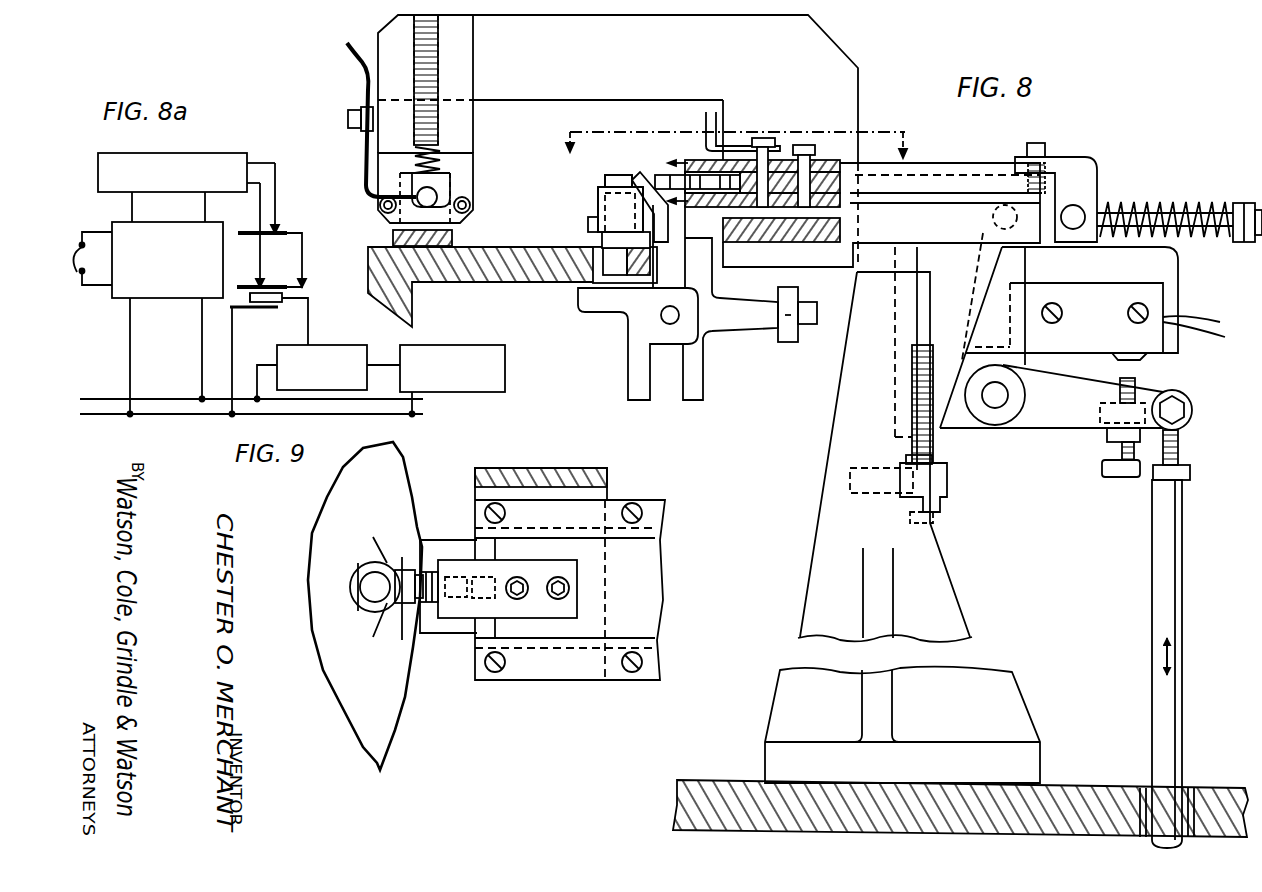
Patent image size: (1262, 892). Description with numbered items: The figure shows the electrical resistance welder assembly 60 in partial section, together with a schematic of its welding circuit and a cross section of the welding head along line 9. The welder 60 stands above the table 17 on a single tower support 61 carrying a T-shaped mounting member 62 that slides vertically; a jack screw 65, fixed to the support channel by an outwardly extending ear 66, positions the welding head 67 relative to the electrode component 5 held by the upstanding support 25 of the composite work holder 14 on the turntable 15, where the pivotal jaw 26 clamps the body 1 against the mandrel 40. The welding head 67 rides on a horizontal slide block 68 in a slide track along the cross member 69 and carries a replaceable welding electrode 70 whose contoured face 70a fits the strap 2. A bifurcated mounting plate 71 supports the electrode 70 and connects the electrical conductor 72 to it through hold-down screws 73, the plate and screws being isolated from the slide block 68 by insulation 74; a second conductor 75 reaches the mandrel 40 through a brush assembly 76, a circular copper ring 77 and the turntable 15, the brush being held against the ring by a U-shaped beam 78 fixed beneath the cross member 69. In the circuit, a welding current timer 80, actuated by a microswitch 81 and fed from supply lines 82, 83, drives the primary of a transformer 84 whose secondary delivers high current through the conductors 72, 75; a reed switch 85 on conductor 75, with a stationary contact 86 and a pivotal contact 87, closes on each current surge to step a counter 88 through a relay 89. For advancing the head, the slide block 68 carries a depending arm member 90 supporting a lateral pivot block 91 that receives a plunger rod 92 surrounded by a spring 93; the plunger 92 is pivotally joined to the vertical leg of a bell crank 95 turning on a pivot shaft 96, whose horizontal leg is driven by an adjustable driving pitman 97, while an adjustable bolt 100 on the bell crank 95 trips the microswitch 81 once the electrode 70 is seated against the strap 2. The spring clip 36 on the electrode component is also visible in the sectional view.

In FIG. 8, the body 1 is at (608, 173).
In FIG. 8, the strap 2 is at (624, 173).
In FIG. 9, the strap 2 is at (383, 612).
In FIG. 8, the electrode component 5 is at (615, 150).
In FIG. 9, the electrode component 5 is at (350, 575).
In FIG. 8, the section line 9- 9 is at (745, 162).
In FIG. 8, the composite work holder 14 is at (608, 325).
In FIG. 8, the turntable 15 is at (512, 273).
In FIG. 8, the table 17 is at (1217, 797).
In FIG. 8, the upstanding support 25 is at (576, 201).
In FIG. 9, the upstanding support 25 is at (335, 614).
In FIG. 8, the pivotal jaw 26 is at (729, 347).
In FIG. 9, the spring clip 36 is at (403, 557).
In FIG. 8A, the mandrel 40 is at (304, 283).
In FIG. 8, the mandrel 40 is at (603, 240).
In FIG. 8, the electrical resistance welder assembly 60 is at (1036, 116).
In FIG. 8, the tower support 61 is at (828, 518).
In FIG. 8, the T-shaped mounting member 62 is at (966, 277).
In FIG. 8, the jack screw 65 is at (932, 459).
In FIG. 8, the outwardly extending ear 66 is at (950, 485).
In FIG. 8, the welding head 67 is at (740, 110).
In FIG. 9, the welding head 67 is at (462, 545).
In FIG. 8, the horizontal slide block 68 is at (843, 170).
In FIG. 9, the horizontal slide block 68 is at (647, 556).
In FIG. 8, the cross member 69 is at (918, 233).
In FIG. 9, the cross member 69 is at (652, 512).
In FIG. 8A, the welding electrode 70 is at (303, 243).
In FIG. 8, the welding electrode 70 is at (670, 163).
In FIG. 9, the welding electrode 70 is at (434, 575).
In FIG. 9, the contoured face 70a is at (403, 638).
In FIG. 8, the bifurcated mounting plate 71 is at (669, 176).
In FIG. 9, the bifurcated mounting plate 71 is at (572, 608).
In FIG. 8A, the electrical conductor 72 is at (282, 231).
In FIG. 8, the electrical conductor 72 is at (712, 113).
In FIG. 8, the hold-down screws 73 is at (762, 138).
In FIG. 9, the hold-down screws 73 is at (557, 577).
In FIG. 8, the insulation 74 is at (790, 150).
In FIG. 8A, the second conductor 75 is at (248, 284).
In FIG. 8, the second conductor 75 is at (346, 50).
In FIG. 8, the brush assembly 76 is at (440, 177).
In FIG. 8, the circular copper ring 77 is at (393, 238).
In FIG. 8, the U-shaped beam 78 is at (817, 40).
In FIG. 8A, the welding current timer 80 is at (118, 298).
In FIG. 8A, the microswitch 81 is at (80, 231).
In FIG. 8, the microswitch 81 is at (1165, 338).
In FIG. 8A, the supply line 82 is at (116, 398).
In FIG. 8A, the supply line 83 is at (106, 414).
In FIG. 8A, the transformer 84 is at (217, 153).
In FIG. 8A, the reed switch 85 is at (271, 308).
In FIG. 8A, the stationary contact 86 is at (265, 293).
In FIG. 8A, the pivotal contact 87 is at (248, 309).
In FIG. 8A, the counter 88 is at (477, 394).
In FIG. 8A, the relay 89 is at (340, 345).
In FIG. 8, the depending arm member 90 is at (1073, 158).
In FIG. 8, the lateral pivot block 91 is at (1083, 207).
In FIG. 8, the plunger rod 92 is at (1220, 240).
In FIG. 8, the spring 93 is at (1168, 200).
In FIG. 8, the bell crank 95 is at (1015, 266).
In FIG. 8, the pivot shaft 96 is at (1002, 403).
In FIG. 8, the adjustable driving pitman 97 is at (1183, 508).
In FIG. 8, the adjustable bolt 100 is at (1122, 478).